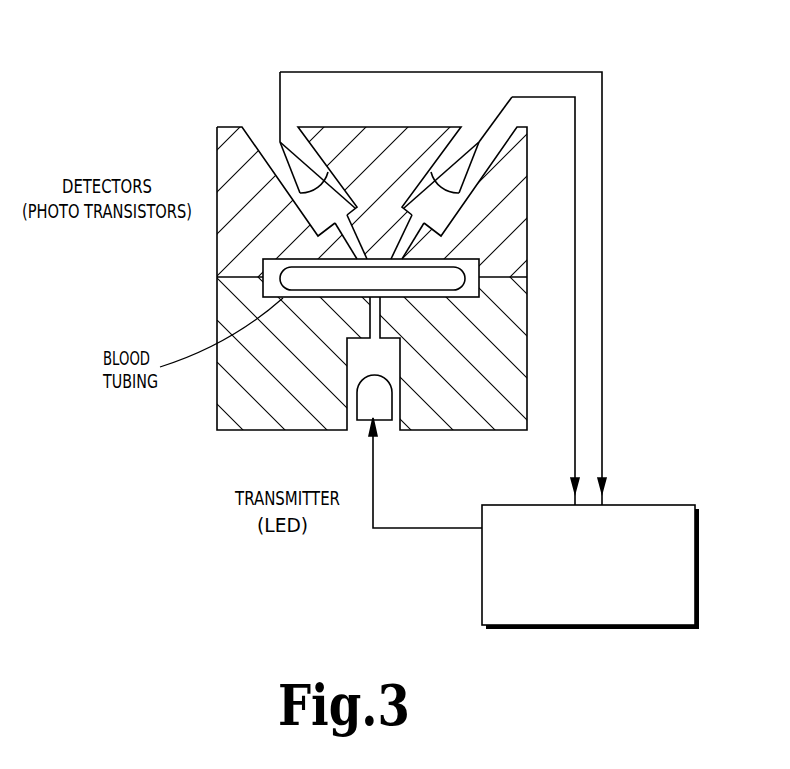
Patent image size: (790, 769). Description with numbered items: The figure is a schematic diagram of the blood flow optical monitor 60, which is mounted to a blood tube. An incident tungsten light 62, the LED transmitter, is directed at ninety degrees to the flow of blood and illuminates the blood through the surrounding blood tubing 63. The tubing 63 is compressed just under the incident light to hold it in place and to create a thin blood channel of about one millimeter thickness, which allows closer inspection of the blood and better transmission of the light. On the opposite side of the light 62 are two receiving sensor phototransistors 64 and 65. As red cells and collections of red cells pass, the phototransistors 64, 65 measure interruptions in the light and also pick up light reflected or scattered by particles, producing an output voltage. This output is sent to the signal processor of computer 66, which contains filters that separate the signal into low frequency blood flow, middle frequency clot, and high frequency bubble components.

The optical monitor 60 is at (662, 117).
The incident tungsten light 62 is at (362, 413).
The blood tubing 63 is at (473, 270).
The receiving sensor phototransistor 64 is at (477, 151).
The receiving sensor phototransistor 65 is at (282, 143).
The signal processor of computer 66 is at (652, 503).